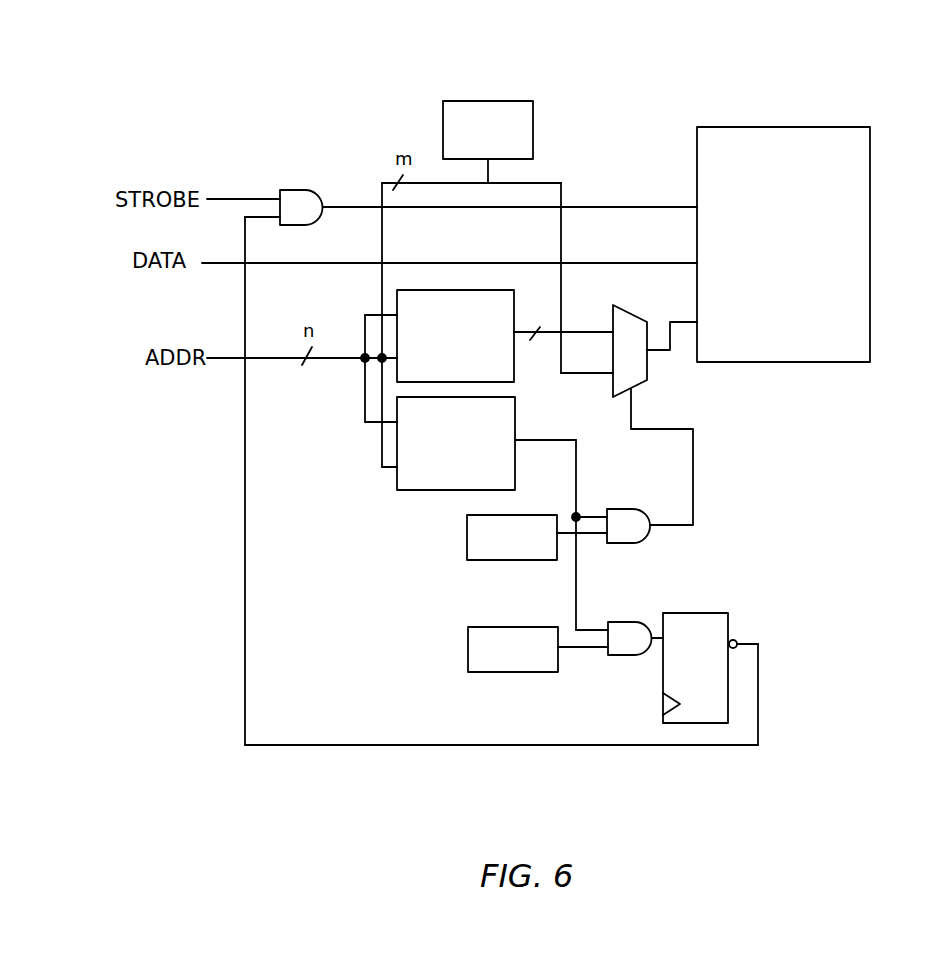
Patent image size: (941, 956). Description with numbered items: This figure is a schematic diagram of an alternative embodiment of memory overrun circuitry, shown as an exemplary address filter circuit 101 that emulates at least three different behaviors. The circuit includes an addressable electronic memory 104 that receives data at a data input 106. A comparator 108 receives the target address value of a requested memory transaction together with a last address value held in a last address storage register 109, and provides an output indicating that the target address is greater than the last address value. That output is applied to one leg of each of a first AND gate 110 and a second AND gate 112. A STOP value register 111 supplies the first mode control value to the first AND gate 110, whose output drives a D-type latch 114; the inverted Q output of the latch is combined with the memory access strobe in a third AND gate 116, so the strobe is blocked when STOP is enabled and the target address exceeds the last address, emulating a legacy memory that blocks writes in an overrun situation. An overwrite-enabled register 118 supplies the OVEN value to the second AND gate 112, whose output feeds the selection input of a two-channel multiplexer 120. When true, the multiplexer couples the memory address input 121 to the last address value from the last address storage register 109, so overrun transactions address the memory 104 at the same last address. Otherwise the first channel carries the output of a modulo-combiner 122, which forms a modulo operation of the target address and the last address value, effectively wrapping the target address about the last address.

The address filter circuit 101 is at (618, 107).
The addressable electronic memory 104 is at (828, 125).
The data input 106 is at (695, 260).
The comparator 108 is at (407, 490).
The last address storage register 109 is at (488, 98).
The first AND gate 110 is at (637, 658).
The STOP value register 111 is at (492, 675).
The second AND gate 112 is at (615, 508).
The D-type latch 114 is at (700, 612).
The third AND gate 116 is at (292, 190).
The overwrite-enabled register 118 is at (490, 563).
The two-channel multiplexer 120 is at (638, 318).
The memory address input 121 is at (695, 312).
The modulo-combiner 122 is at (435, 288).